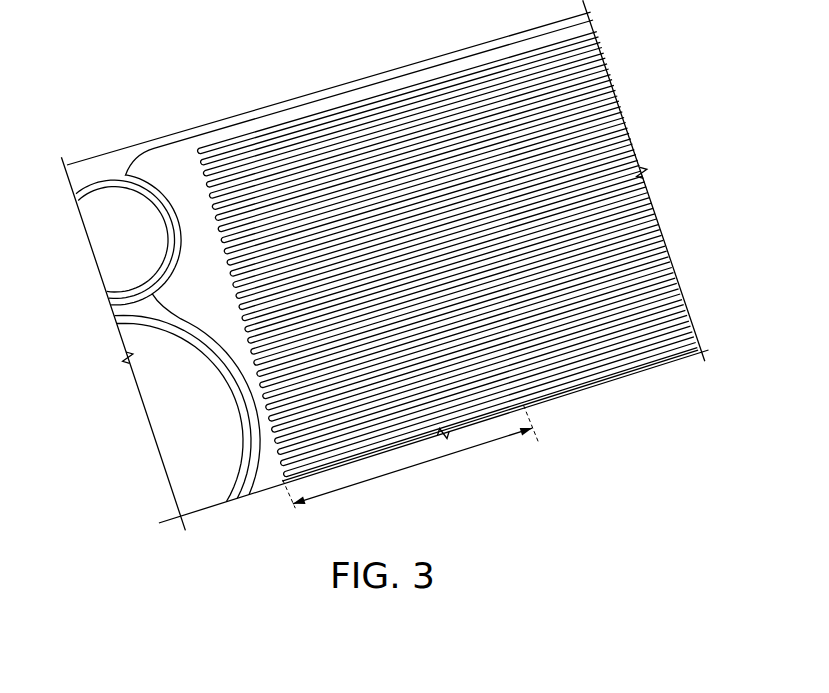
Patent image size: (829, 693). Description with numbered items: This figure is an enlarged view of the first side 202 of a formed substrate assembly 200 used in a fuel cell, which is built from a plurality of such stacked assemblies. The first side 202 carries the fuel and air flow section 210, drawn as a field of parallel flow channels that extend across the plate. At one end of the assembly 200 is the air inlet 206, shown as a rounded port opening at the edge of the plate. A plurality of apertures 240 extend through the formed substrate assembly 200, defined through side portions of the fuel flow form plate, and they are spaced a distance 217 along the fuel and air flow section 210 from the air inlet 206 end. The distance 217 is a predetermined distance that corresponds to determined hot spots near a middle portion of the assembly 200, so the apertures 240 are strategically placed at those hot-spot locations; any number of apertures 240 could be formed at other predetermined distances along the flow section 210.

The formed substrate assembly 200 is at (207, 52).
The first side 202 is at (118, 176).
The air inlet 206 is at (170, 402).
The fuel and air flow section 210 is at (316, 78).
The distance 217 is at (427, 464).
The plurality of apertures 240 is at (456, 64).